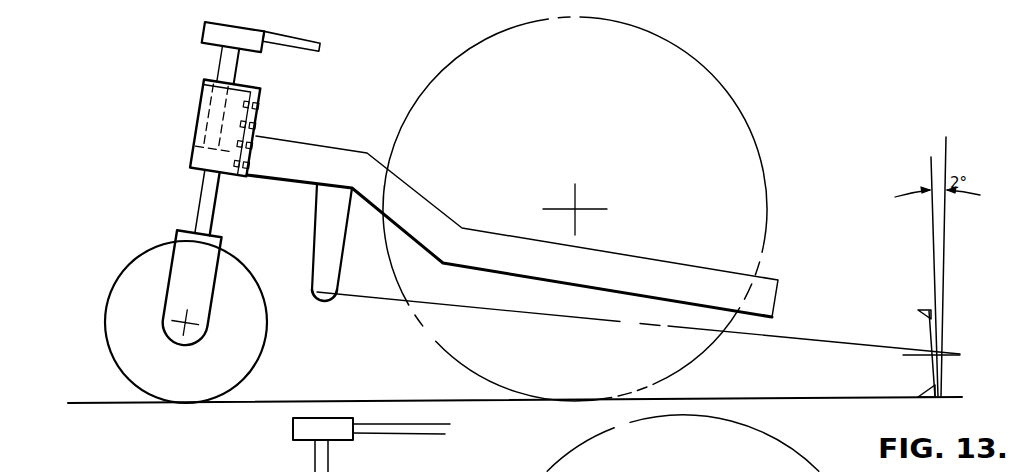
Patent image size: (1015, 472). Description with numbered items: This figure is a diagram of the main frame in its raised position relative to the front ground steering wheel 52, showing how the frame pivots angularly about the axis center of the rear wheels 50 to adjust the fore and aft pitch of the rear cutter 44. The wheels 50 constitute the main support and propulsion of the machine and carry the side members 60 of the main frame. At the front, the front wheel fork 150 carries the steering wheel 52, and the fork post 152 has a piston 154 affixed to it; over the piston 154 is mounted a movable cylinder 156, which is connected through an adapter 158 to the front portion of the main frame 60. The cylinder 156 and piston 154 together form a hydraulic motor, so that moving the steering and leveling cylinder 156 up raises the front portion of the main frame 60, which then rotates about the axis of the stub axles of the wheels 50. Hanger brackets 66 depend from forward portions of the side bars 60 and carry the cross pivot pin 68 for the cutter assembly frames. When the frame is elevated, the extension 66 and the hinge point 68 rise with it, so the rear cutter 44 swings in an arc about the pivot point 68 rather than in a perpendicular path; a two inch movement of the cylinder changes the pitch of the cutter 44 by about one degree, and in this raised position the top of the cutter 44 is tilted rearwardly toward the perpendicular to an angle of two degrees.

The rear cutter 44 is at (932, 328).
The wheels 50 is at (730, 128).
The front ground steering wheel 52 is at (117, 322).
The main frame side members 60 is at (597, 272).
The hanger brackets 66 is at (318, 226).
The cross pivot pin 68 is at (320, 292).
The front wheel fork 150 is at (183, 270).
The fork post 152 is at (203, 207).
The piston 154 is at (197, 157).
The movable cylinder 156 is at (195, 117).
The adapter 158 is at (258, 110).